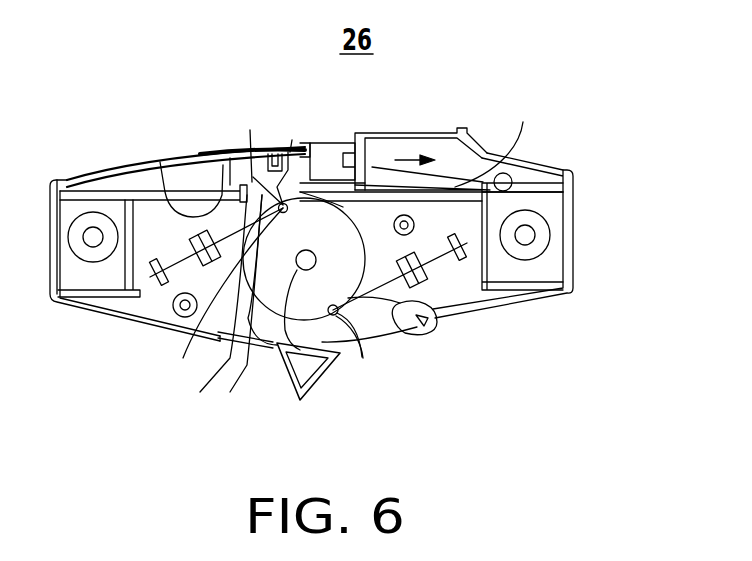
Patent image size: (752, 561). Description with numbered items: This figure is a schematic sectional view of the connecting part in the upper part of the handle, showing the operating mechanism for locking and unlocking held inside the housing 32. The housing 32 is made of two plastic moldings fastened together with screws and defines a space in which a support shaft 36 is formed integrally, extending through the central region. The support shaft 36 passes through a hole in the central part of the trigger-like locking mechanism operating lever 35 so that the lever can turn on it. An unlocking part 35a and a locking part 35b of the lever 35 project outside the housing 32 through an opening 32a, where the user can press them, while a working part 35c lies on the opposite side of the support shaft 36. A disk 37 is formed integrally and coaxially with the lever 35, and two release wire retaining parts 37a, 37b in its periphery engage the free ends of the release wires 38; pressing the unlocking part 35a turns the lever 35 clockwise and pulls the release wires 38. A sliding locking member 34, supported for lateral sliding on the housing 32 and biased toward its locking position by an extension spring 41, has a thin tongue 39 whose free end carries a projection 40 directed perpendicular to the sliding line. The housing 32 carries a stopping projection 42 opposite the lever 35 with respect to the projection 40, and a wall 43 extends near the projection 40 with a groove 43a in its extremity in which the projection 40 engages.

The housing 32 is at (107, 300).
The opening 32a is at (211, 312).
The sliding locking member 34 is at (422, 133).
The locking mechanism operating lever 35 is at (338, 362).
The unlocking part 35a is at (322, 387).
The locking part 35b is at (430, 333).
The working part 35c is at (292, 140).
The support shaft 36 is at (292, 308).
The disk 37 is at (247, 365).
The release wire retaining part 37a is at (215, 298).
The release wire retaining part 37b is at (362, 357).
The release wires 38 is at (123, 170).
The thin tongue 39 is at (332, 145).
The projection 40 is at (250, 130).
The extension spring 41 is at (502, 144).
The stopping projection 42 is at (270, 152).
The wall 43 is at (223, 165).
The groove 43a is at (160, 162).